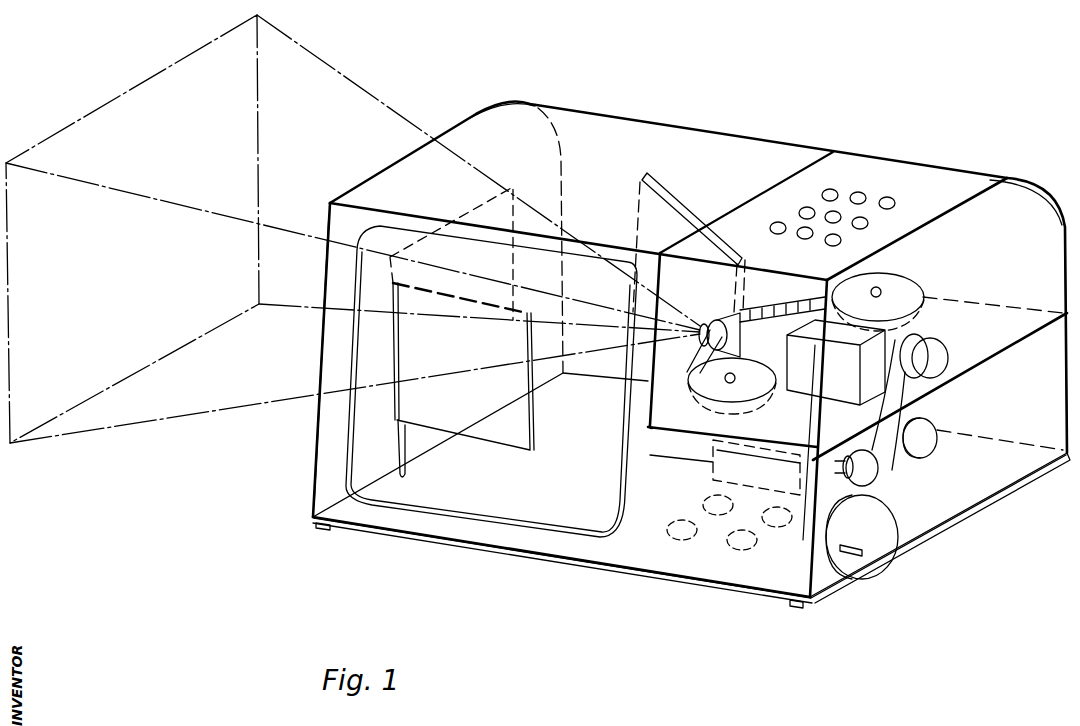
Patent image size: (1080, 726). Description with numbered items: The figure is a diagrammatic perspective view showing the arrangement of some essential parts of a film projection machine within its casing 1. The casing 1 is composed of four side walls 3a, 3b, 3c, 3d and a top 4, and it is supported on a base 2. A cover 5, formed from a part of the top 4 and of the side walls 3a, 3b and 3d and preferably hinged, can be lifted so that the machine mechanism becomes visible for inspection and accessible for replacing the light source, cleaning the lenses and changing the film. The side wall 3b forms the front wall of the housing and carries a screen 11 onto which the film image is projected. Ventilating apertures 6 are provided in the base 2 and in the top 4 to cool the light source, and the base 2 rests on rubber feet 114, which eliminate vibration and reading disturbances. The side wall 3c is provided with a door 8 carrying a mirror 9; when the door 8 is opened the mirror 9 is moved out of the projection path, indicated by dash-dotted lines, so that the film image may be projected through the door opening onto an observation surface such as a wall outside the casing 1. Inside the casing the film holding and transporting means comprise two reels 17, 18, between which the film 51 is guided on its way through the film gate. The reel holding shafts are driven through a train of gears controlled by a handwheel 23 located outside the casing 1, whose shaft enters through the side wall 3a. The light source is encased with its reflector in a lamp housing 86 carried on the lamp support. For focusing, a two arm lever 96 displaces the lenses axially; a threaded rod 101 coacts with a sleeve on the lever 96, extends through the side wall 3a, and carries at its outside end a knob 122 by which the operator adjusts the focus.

The casing 1 is at (771, 130).
The base 2 is at (736, 586).
The side wall 3a is at (1050, 412).
The side wall 3b is at (627, 560).
The side wall 3c is at (323, 432).
The side wall 3d is at (683, 138).
The top 4 is at (672, 239).
The cover 5 is at (600, 110).
The ventilating apertures 6 is at (890, 200).
The door 8 is at (505, 440).
The mirror 9 is at (433, 275).
The screen 11 is at (540, 522).
The reel 17 is at (922, 310).
The reel 18 is at (752, 398).
The handwheel 23 is at (866, 574).
The film 51 is at (780, 313).
The lamp housing 86 is at (790, 398).
The two arm lever 96 is at (668, 428).
The rod 101 is at (692, 446).
The rubber feet 114 is at (320, 528).
The knob 122 is at (862, 470).